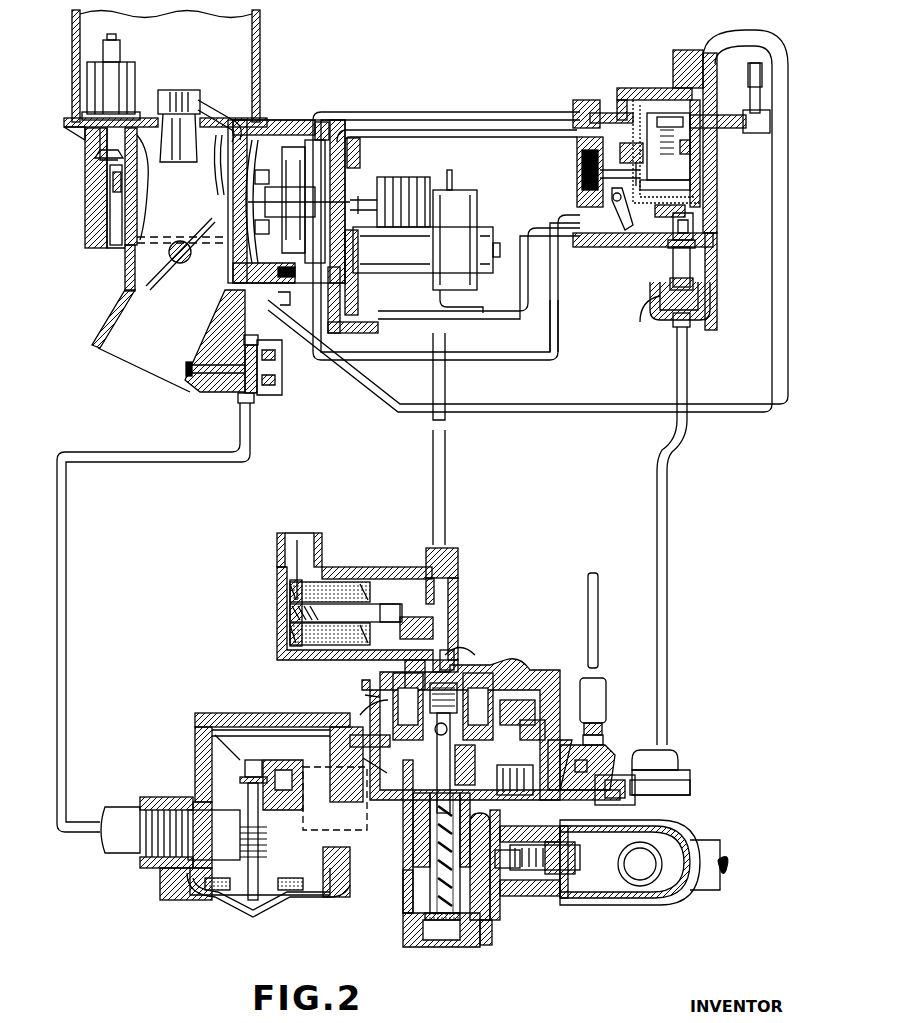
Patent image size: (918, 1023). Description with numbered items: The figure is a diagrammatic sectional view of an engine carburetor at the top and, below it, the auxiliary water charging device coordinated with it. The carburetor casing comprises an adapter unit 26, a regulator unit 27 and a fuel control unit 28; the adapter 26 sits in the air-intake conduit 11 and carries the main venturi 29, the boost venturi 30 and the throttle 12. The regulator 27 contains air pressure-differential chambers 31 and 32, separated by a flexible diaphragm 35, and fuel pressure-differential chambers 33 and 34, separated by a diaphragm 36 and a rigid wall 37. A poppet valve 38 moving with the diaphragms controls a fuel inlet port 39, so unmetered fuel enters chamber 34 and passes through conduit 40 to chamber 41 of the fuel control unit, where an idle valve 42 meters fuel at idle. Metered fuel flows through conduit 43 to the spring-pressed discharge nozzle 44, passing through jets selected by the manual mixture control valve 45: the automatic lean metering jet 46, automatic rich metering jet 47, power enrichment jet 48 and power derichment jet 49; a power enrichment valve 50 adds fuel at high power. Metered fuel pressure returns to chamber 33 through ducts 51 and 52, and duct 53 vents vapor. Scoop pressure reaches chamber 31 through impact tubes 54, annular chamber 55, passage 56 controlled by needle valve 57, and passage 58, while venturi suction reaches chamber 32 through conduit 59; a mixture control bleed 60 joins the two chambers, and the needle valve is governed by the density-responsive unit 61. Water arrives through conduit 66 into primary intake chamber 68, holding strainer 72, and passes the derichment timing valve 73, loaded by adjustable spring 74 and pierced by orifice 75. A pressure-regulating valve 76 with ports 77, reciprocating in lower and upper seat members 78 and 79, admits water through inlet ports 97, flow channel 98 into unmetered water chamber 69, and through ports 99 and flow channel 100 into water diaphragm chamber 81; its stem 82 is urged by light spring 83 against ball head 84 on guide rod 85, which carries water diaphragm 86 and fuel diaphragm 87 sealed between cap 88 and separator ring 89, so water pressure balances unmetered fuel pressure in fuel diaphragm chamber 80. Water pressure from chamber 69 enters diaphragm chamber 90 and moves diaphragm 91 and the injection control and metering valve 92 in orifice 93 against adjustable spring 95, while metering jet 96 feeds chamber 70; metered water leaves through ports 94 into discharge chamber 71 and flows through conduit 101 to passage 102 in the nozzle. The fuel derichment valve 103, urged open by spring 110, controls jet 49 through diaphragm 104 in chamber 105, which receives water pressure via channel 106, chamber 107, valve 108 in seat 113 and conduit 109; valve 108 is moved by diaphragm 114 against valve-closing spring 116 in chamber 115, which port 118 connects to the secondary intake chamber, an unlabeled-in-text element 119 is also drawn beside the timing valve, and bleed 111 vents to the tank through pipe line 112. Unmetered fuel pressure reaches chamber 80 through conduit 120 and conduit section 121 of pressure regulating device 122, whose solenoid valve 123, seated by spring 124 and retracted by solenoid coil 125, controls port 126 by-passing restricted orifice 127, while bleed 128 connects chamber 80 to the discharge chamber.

The air-intake conduit 11 is at (260, 24).
The throttle 12 is at (166, 272).
The adapter unit 26 is at (84, 230).
The regulator unit 27 is at (290, 125).
The fuel control unit 28 is at (625, 76).
The main venturi 29 is at (135, 195).
The boost venturi 30 is at (180, 92).
The air pressure-differential chamber 31 is at (284, 165).
The air pressure-differential chamber 32 is at (330, 120).
The fuel pressure-differential chamber 33 is at (360, 146).
The fuel pressure-differential chamber 34 is at (426, 241).
The flexible diaphragm 35 is at (300, 130).
The diaphragm 36 is at (360, 262).
The rigid wall 37 is at (298, 294).
The poppet valve 38 is at (404, 190).
The fuel inlet port 39 is at (375, 200).
The conduit 40 is at (474, 326).
The chamber 41 is at (712, 228).
The idle valve 42 is at (622, 235).
The conduit 43 is at (590, 412).
The discharge nozzle 44 is at (205, 378).
The manual mixture control valve 45 is at (700, 133).
The automatic lean metering jet 46 is at (690, 158).
The automatic rich metering jet 47 is at (690, 188).
The power enrichment jet 48 is at (670, 245).
The power derichment jet 49 is at (690, 210).
The power enrichment valve 50 is at (577, 155).
The duct 51 is at (558, 338).
The duct 52 is at (530, 110).
The duct 53 is at (470, 130).
The impact tubes 54 is at (146, 135).
The annular chamber 55 is at (145, 170).
The passage 56 is at (104, 162).
The needle valve 57 is at (86, 144).
The passage 58 is at (118, 240).
The conduit 59 is at (214, 104).
The mixture control bleed 60 is at (280, 280).
The density-responsive unit 61 is at (92, 80).
The conduit 66 is at (705, 890).
The primary intake chamber 68 is at (587, 895).
The unmetered water pressure chamber 69 is at (362, 880).
The chamber 70 is at (215, 748).
The discharge chamber 71 is at (190, 858).
The strainer 72 is at (630, 880).
The derichment timing valve 73 is at (495, 905).
The adjustable spring 74 is at (545, 880).
The orifice 75 is at (553, 854).
The pressure-regulating valve 76 is at (413, 836).
The ports 77 is at (410, 800).
The lower seat member 78 is at (425, 870).
The upper seat member 79 is at (437, 755).
The fuel diaphragm chamber 80 is at (498, 680).
The water diaphragm chamber 81 is at (358, 712).
The stem 82 is at (392, 782).
The light spring 83 is at (440, 925).
The ball head 84 is at (481, 706).
The guide rod 85 is at (470, 660).
The water diaphragm 86 is at (408, 706).
The fuel diaphragm 87 is at (510, 700).
The cap 88 is at (500, 668).
The separator ring 89 is at (530, 720).
The diaphragm chamber 90 is at (275, 910).
The diaphragm 91 is at (240, 908).
The injection control and metering valve 92 is at (250, 758).
The orifice 93 is at (230, 758).
The ports 94 is at (195, 792).
The adjustable spring 95 is at (242, 838).
The metering jet 96 is at (335, 798).
The inlet ports 97 is at (481, 863).
The flow channel 98 is at (408, 900).
The ports 99 is at (462, 776).
The flow channel 100 is at (350, 742).
The conduit 101 is at (175, 462).
The passage 102 is at (232, 388).
The fuel derichment valve 103 is at (690, 260).
The diaphragm 104 is at (700, 283).
The chamber 105 is at (710, 310).
The channel 106 is at (640, 826).
The chamber 107 is at (590, 730).
The valve 108 is at (625, 800).
The conduit 109 is at (690, 782).
The spring 110 is at (639, 315).
The bleed 111 is at (660, 752).
The pipe line 112 is at (598, 616).
The seat 113 is at (610, 760).
The diaphragm 114 is at (606, 692).
The chamber 115 is at (588, 788).
The valve-closing spring 116 is at (526, 787).
The port 118 is at (564, 751).
The seat 119 is at (605, 730).
The conduit 120 is at (446, 383).
The conduit section 121 is at (460, 578).
The pressure regulating device 122 is at (266, 654).
The solenoid valve 123 is at (330, 600).
The spring 124 is at (290, 618).
The solenoid coil 125 is at (300, 580).
The port 126 is at (410, 612).
The restricted orifice 127 is at (458, 640).
The bleed 128 is at (398, 690).